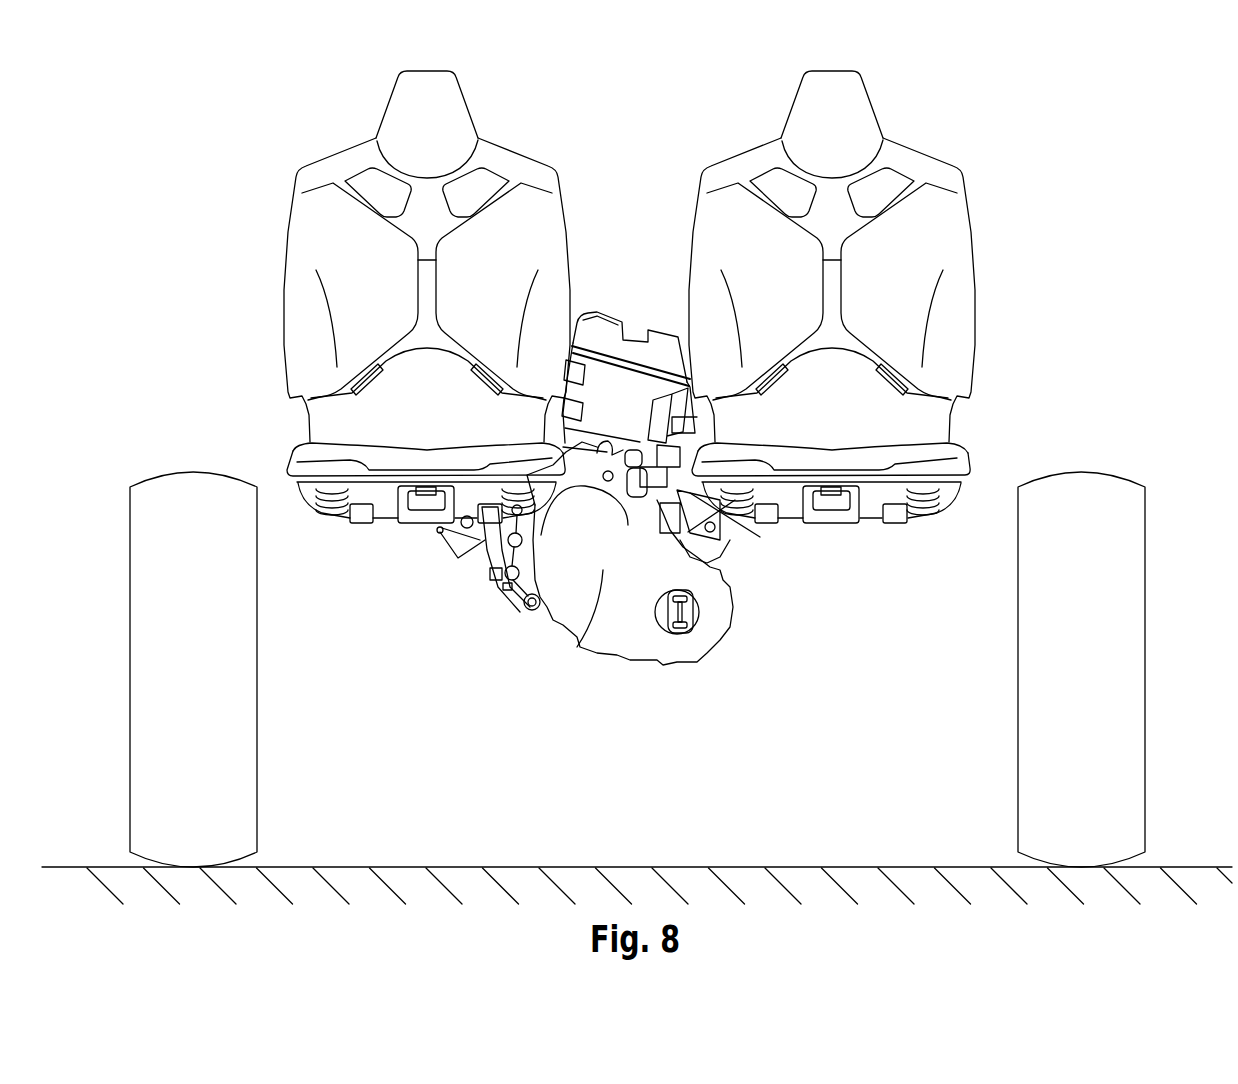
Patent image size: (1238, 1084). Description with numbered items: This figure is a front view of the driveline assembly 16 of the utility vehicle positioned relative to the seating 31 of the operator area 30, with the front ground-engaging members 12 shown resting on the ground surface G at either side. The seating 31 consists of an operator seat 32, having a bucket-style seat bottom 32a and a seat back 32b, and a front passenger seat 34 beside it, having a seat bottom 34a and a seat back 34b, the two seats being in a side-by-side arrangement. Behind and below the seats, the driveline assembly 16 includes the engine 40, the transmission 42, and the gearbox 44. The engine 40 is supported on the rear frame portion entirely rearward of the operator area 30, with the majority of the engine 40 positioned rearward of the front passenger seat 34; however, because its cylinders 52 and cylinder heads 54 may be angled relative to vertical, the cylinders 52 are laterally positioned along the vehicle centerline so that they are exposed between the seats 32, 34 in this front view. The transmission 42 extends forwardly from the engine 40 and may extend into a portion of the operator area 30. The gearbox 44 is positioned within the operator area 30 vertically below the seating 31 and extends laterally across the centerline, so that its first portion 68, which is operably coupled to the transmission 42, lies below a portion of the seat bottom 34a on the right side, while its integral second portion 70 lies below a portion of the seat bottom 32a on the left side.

The front ground-engaging members 12 is at (1132, 579).
The driveline assembly 16 is at (632, 419).
The operator area 30 is at (929, 280).
The seating 31 is at (843, 219).
The operator seat 32 is at (887, 280).
The seat bottom 32a is at (868, 459).
The seat back 32b is at (887, 240).
The front passenger seat 34 is at (365, 297).
The seat bottom 34a is at (338, 449).
The seat back 34b is at (297, 306).
The engine 40 is at (640, 408).
The transmission 42 is at (705, 510).
The gearbox 44 is at (650, 640).
The cylinders 52 is at (656, 336).
The cylinder heads 54 is at (602, 333).
The first portion 68 is at (606, 572).
The second portion 70 is at (717, 609).
The ground surface G is at (795, 868).